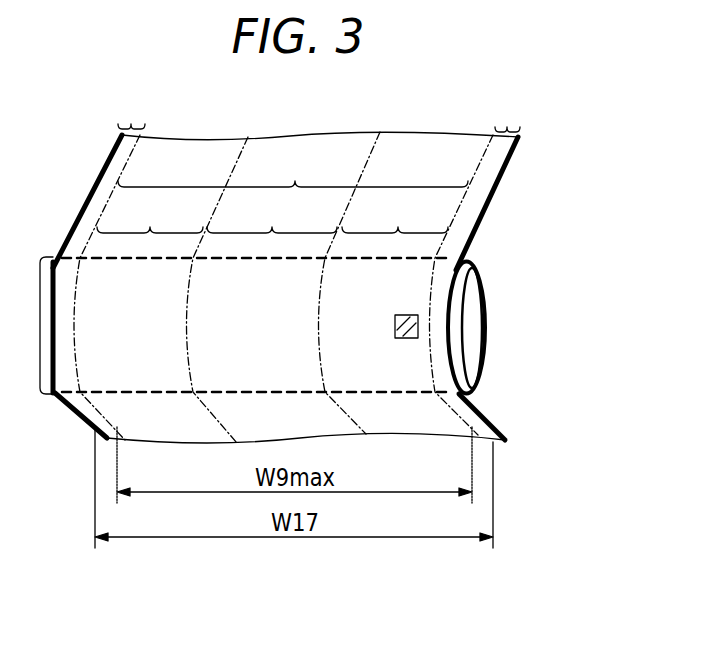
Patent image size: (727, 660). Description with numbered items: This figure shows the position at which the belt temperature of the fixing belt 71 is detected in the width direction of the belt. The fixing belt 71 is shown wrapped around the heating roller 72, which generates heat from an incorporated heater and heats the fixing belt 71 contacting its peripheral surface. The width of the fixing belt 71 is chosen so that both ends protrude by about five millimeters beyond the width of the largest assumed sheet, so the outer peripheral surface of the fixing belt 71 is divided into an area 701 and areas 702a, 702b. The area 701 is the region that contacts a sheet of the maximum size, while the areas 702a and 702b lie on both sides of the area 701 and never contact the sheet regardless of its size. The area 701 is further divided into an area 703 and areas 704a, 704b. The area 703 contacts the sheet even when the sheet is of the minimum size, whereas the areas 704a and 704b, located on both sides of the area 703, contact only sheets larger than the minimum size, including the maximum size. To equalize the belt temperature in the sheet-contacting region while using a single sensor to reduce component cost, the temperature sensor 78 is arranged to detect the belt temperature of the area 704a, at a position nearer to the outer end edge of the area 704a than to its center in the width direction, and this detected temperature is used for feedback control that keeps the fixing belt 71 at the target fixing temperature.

The fixing belt 71 is at (492, 196).
The heating roller 72 is at (472, 348).
The temperature sensor 78 is at (402, 315).
The area 701 is at (293, 169).
The area 702a is at (507, 114).
The area 702b is at (142, 109).
The area 703 is at (272, 214).
The area 704a is at (395, 214).
The area 704b is at (150, 214).